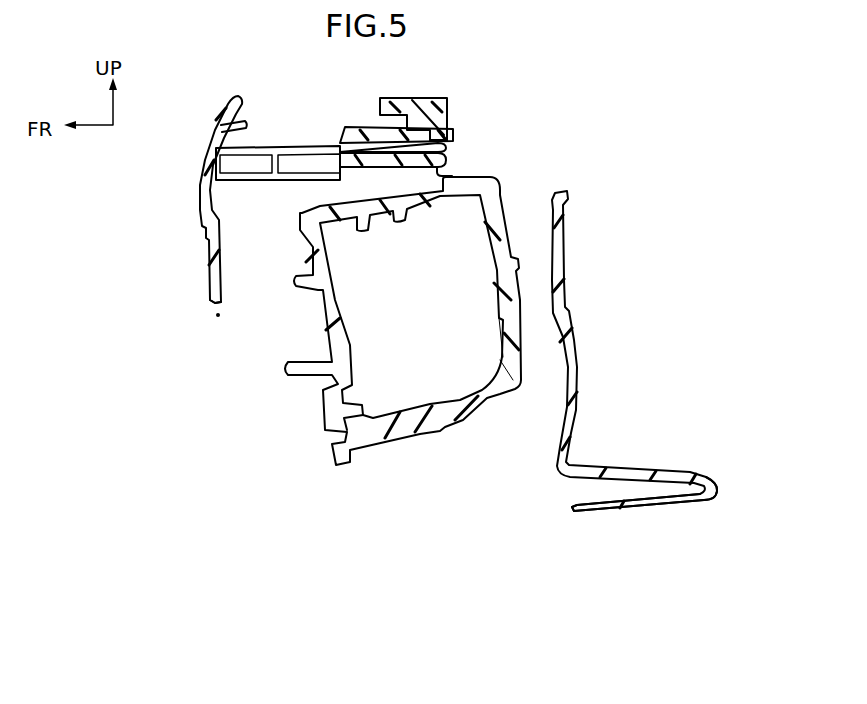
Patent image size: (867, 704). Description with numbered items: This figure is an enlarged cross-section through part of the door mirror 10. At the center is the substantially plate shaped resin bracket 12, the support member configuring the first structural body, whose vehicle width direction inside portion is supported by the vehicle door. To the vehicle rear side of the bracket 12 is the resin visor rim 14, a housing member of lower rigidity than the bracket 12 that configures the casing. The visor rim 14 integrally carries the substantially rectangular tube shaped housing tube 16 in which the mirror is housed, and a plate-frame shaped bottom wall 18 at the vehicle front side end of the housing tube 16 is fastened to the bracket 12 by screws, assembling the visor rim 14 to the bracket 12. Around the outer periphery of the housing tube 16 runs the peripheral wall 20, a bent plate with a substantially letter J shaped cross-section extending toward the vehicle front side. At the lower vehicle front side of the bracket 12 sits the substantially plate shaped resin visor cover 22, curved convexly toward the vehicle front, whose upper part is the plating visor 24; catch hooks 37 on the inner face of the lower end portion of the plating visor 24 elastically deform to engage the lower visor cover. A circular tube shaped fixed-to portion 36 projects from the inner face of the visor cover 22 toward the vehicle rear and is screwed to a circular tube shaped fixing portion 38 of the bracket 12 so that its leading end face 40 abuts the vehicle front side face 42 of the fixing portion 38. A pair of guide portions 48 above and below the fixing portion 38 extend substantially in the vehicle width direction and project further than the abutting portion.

The door mirror 10 is at (631, 238).
The bracket 12 is at (497, 193).
The visor rim 14 is at (624, 509).
The housing tube 16 is at (653, 467).
The bottom wall 18 is at (578, 387).
The peripheral wall 20 is at (697, 477).
The visor cover 22 is at (156, 206).
The plating visor 24 is at (202, 220).
The fixed-to portion 36 is at (387, 125).
The catch hook 37 is at (212, 286).
The fixing portion 38 is at (444, 157).
The leading end face 40 is at (343, 143).
The vehicle front side face 42 is at (430, 140).
The guide portion 48 is at (407, 100).